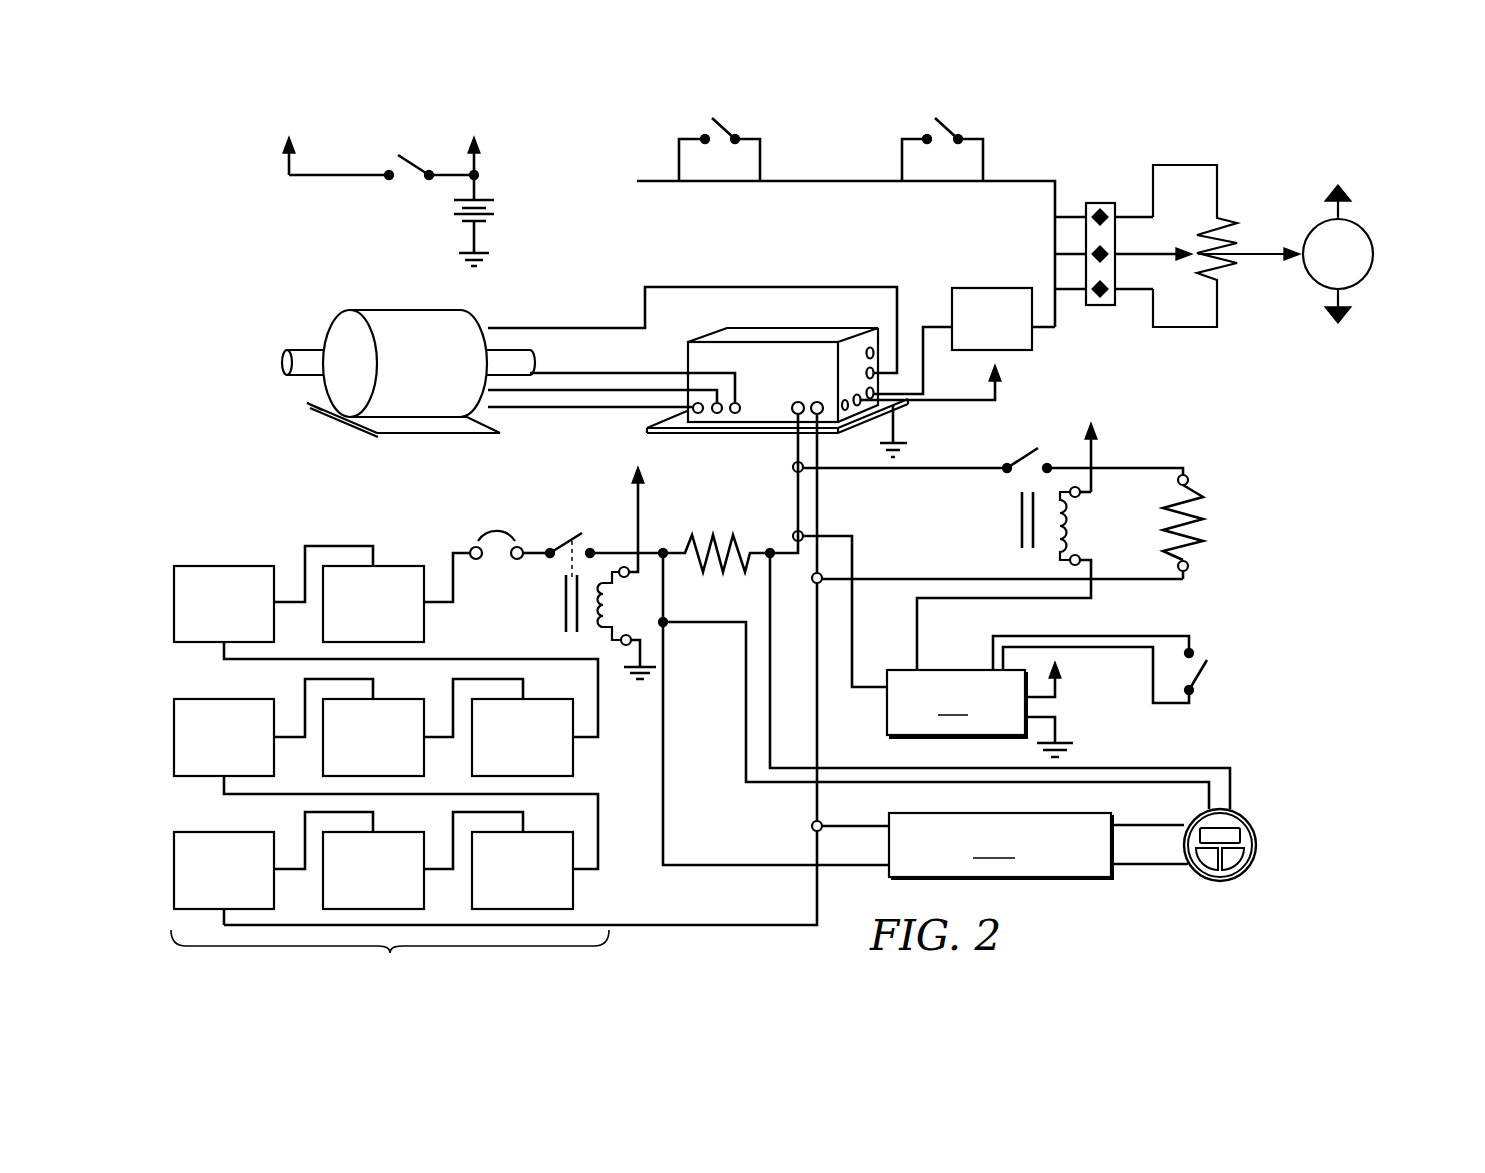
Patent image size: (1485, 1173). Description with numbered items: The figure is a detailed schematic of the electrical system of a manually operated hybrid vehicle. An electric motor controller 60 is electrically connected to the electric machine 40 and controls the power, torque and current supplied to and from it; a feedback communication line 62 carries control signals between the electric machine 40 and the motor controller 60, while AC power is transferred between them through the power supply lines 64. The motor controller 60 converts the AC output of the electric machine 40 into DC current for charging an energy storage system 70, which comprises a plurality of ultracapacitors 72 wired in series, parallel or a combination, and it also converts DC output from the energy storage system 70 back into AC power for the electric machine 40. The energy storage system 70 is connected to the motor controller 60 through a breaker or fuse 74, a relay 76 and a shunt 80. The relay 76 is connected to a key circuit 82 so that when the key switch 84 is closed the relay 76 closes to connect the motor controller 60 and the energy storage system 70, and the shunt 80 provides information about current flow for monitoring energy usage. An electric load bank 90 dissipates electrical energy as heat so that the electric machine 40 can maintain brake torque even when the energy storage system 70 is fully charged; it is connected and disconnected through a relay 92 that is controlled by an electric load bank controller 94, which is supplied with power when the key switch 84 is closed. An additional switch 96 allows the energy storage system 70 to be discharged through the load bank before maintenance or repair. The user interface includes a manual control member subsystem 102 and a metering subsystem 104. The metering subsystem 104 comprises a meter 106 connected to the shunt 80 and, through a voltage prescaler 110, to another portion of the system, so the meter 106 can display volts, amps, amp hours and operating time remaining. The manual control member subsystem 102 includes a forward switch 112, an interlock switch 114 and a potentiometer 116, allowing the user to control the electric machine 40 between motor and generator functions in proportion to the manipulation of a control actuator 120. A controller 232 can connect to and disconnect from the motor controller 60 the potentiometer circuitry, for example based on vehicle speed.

The electric machine 40 is at (398, 320).
The electric motor controller 60 is at (785, 335).
The feedback communication line 62 is at (578, 322).
The power supply lines 64 is at (598, 393).
The energy storage system 70 is at (377, 764).
The ultracapacitors 72 is at (172, 600).
The breaker or fuse 74 is at (490, 528).
The relay 76 is at (560, 605).
The shunt 80 is at (714, 536).
The key circuit 82 is at (283, 164).
The key switch 84 is at (407, 160).
The electric load bank 90 is at (1205, 518).
The relay 92 is at (1018, 518).
The electric load bank controller 94 is at (980, 713).
The additional switch 96 is at (1200, 680).
The manual control member subsystem 102 is at (1251, 248).
The metering subsystem 104 is at (1205, 874).
The meter 106 is at (1247, 843).
The voltage prescaler 110 is at (1000, 845).
The forward switch 112 is at (741, 128).
The interlock switch 114 is at (962, 128).
The potentiometer 116 is at (1185, 328).
The control actuator 120 is at (1365, 258).
The controller 232 is at (988, 288).